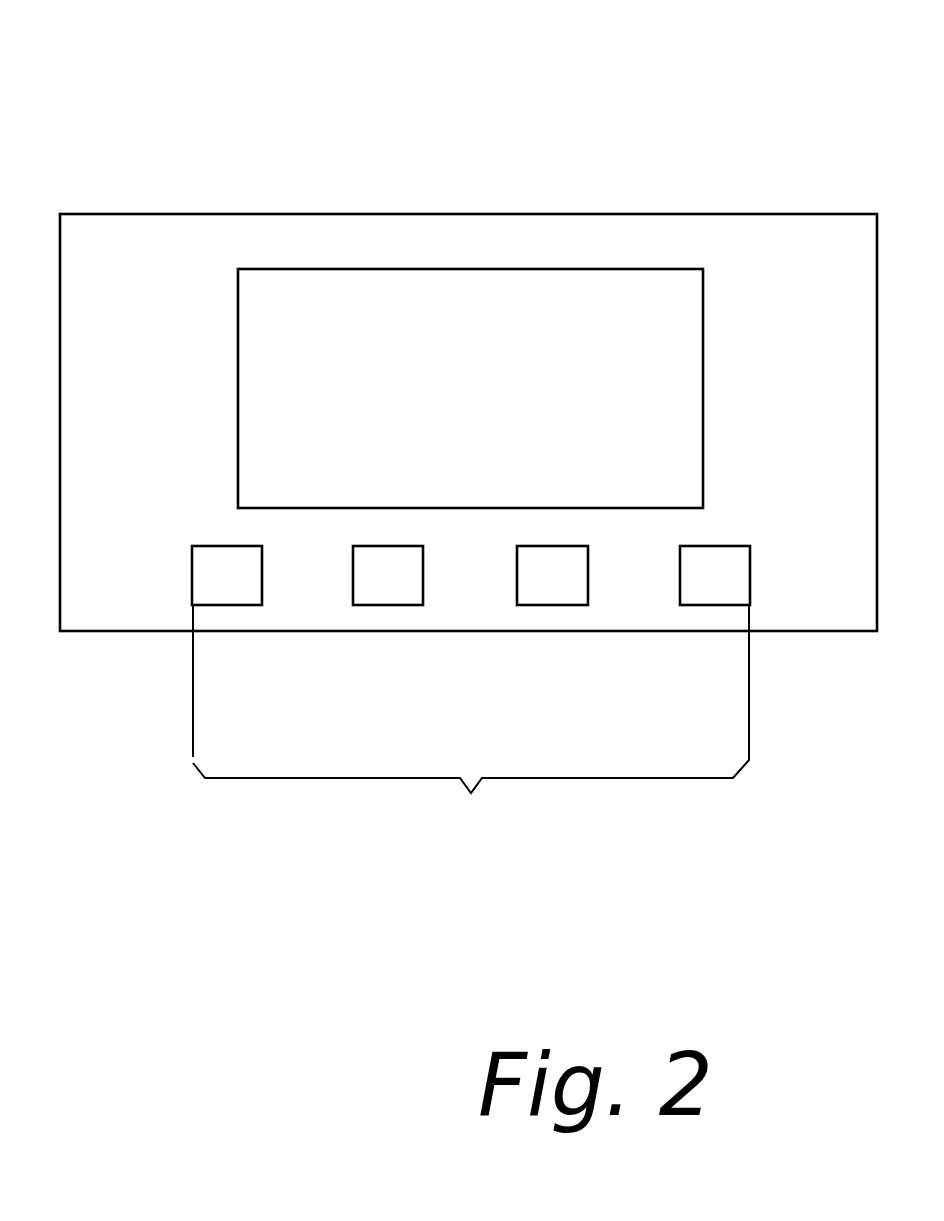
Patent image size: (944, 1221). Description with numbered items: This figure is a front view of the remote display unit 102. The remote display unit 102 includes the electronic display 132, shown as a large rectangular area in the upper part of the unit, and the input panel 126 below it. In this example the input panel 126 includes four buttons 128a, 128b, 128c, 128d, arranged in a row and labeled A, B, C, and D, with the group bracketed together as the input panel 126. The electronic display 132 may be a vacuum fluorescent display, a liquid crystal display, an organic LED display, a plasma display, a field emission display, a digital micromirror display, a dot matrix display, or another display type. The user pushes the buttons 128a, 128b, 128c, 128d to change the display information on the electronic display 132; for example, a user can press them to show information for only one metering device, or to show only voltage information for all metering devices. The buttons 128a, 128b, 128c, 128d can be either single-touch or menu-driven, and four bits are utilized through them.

The remote display unit 102 is at (740, 108).
The electronic display 132 is at (291, 269).
The button 128a is at (220, 605).
The button 128b is at (387, 605).
The button 128c is at (549, 605).
The button 128d is at (695, 605).
The input panel 126 is at (471, 722).